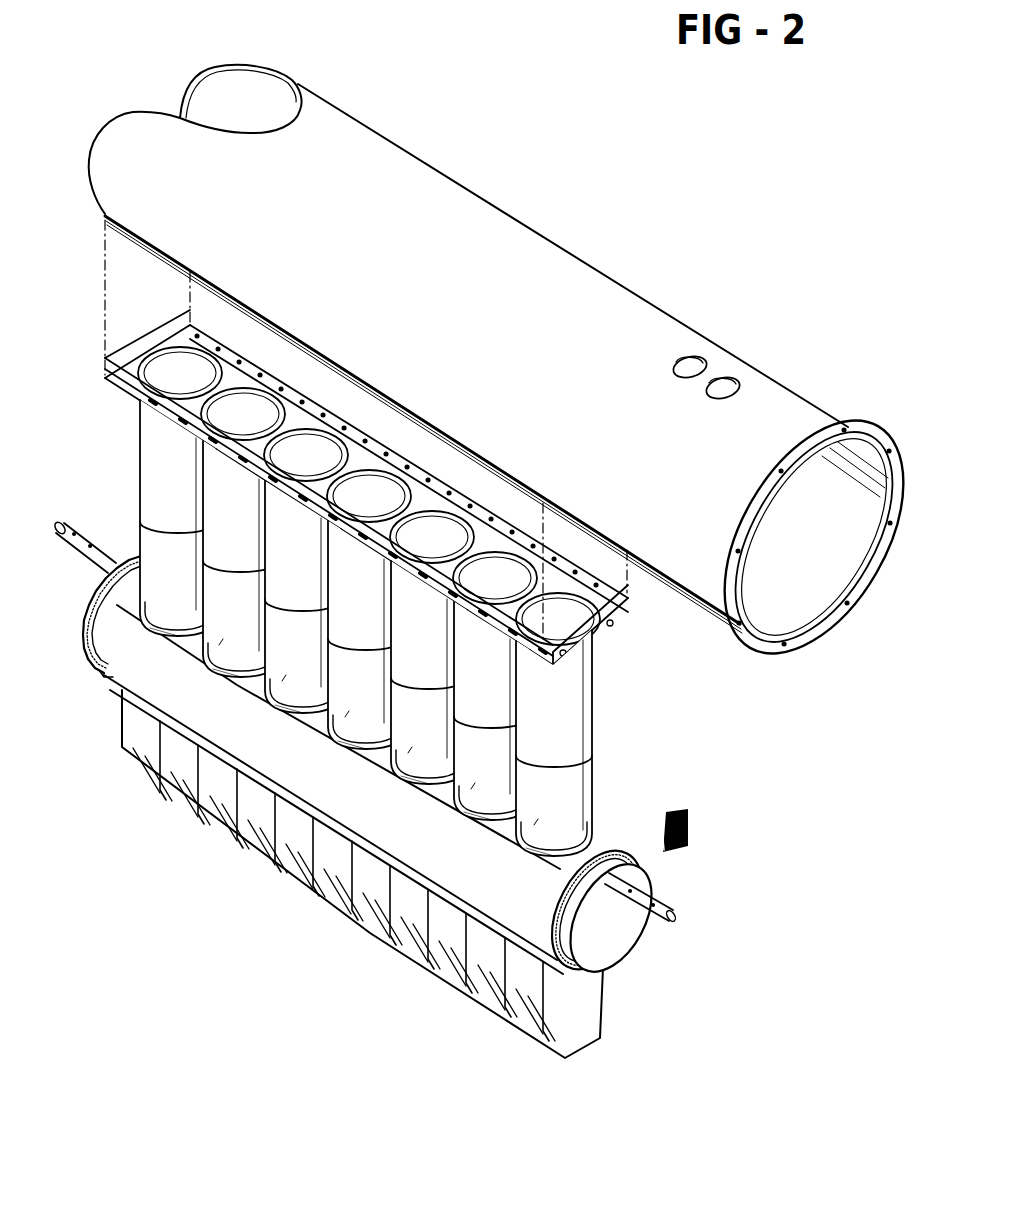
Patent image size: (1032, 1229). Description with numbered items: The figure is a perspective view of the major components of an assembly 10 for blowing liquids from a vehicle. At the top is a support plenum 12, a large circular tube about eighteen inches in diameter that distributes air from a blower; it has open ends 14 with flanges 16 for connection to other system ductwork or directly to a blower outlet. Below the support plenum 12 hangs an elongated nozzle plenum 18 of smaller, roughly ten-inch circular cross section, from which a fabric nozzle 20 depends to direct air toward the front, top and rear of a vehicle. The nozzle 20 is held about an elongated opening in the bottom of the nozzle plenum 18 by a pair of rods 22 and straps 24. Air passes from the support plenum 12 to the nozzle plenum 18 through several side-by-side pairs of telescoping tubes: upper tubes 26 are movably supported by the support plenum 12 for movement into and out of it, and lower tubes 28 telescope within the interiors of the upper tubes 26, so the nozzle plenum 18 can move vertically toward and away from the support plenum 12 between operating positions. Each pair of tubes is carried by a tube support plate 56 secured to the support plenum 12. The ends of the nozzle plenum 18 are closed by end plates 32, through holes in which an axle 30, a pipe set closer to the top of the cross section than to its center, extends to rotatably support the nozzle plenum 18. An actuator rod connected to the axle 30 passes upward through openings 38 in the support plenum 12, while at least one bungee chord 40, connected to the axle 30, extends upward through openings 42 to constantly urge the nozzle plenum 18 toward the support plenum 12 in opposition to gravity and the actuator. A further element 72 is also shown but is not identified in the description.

The assembly 10 is at (782, 250).
The support plenum 12 is at (510, 232).
The open ends 14 is at (837, 620).
The flanges 16 is at (848, 427).
The nozzle plenum 18 is at (128, 665).
The nozzle 20 is at (165, 760).
The rods 22 is at (127, 750).
The straps 24 is at (92, 645).
The upper tubes 26 is at (220, 518).
The lower tubes 28 is at (277, 672).
The axle 30 is at (82, 548).
The end plates 32 is at (612, 945).
The openings 38 is at (678, 362).
The bungee chord 40 is at (692, 822).
The openings 42 is at (742, 392).
The tube support plate 56 is at (177, 343).
The tube end sleeve 72 is at (380, 748).